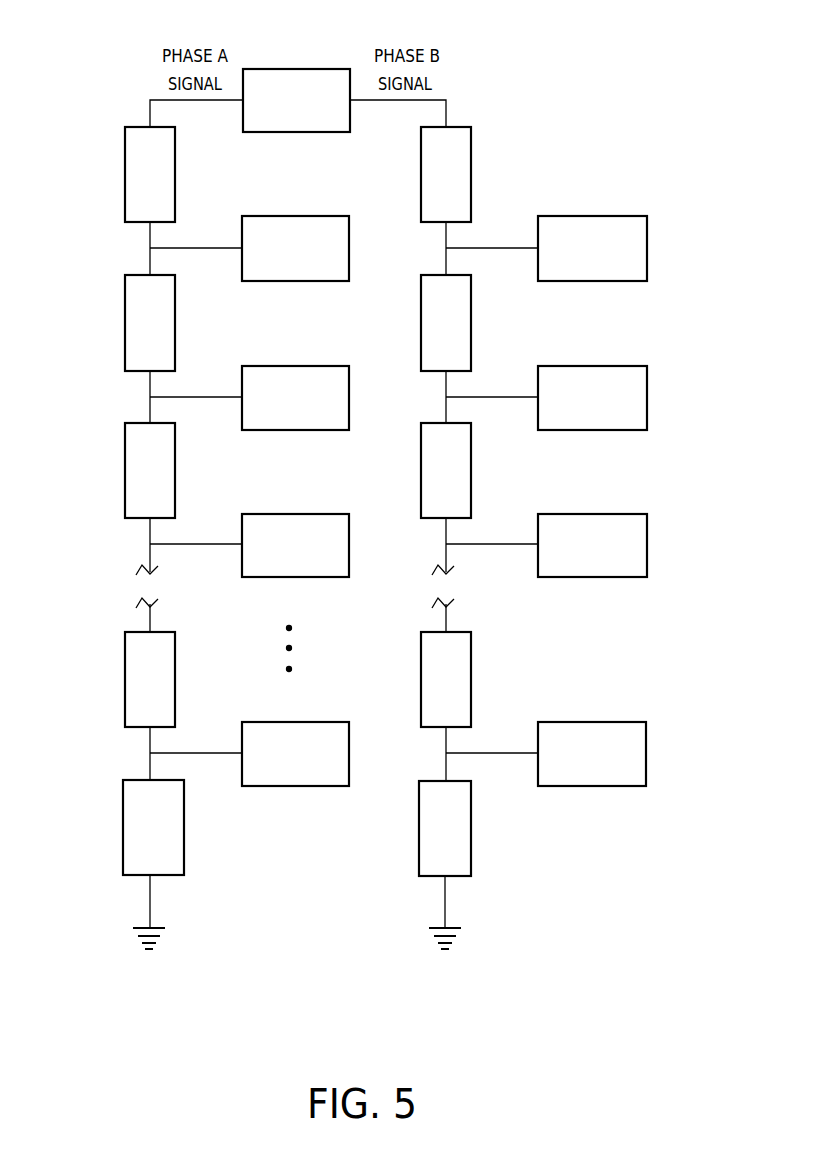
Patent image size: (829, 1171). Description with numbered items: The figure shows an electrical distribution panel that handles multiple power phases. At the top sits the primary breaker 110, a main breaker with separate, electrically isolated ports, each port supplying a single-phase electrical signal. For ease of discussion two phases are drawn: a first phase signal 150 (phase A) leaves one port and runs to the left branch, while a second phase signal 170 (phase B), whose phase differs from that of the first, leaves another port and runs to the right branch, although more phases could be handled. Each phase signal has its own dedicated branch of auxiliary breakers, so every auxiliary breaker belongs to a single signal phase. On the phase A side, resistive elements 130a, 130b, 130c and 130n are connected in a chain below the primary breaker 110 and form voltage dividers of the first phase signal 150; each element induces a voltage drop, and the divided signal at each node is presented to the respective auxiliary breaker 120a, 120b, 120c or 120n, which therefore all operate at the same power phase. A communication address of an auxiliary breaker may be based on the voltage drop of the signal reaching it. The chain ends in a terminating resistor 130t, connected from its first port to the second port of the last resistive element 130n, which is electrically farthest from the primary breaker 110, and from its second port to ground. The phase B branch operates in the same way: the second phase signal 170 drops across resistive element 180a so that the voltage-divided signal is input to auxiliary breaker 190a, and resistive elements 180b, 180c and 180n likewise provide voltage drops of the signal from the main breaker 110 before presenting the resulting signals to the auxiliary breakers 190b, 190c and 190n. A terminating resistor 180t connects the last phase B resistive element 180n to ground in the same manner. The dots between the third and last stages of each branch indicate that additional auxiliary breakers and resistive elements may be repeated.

The primary breaker 110 is at (296, 69).
The first phase signal 150 is at (197, 100).
The second phase signal 170 is at (386, 100).
The resistive element 130a is at (125, 167).
The resistive element 130b is at (125, 323).
The resistive element 130c is at (125, 476).
The resistive element 130n is at (125, 674).
The terminating resistor 130t is at (123, 830).
The auxiliary breaker 120a is at (296, 281).
The auxiliary breaker 120b is at (296, 430).
The auxiliary breaker 120c is at (258, 577).
The auxiliary breaker 120n is at (296, 786).
The resistive element 180a is at (471, 167).
The resistive element 180b is at (471, 323).
The resistive element 180c is at (471, 473).
The resistive element 180n is at (471, 673).
The terminating resistor 180t is at (471, 830).
The auxiliary breaker 190a is at (647, 248).
The auxiliary breaker 190b is at (647, 397).
The auxiliary breaker 190c is at (647, 544).
The auxiliary breaker 190n is at (646, 753).